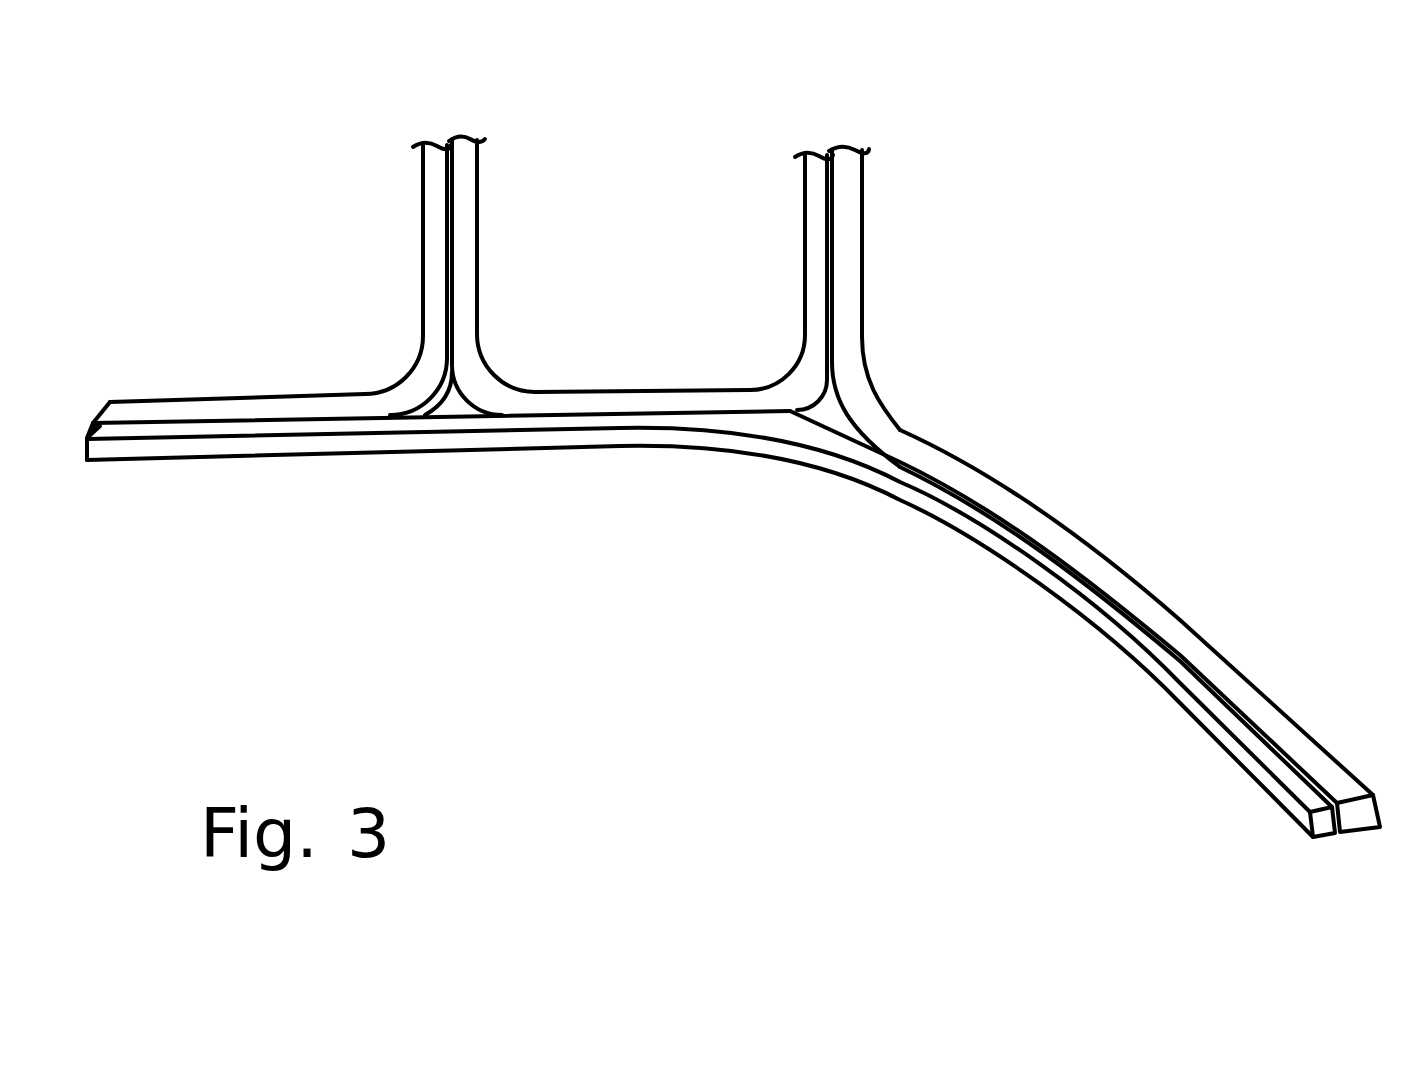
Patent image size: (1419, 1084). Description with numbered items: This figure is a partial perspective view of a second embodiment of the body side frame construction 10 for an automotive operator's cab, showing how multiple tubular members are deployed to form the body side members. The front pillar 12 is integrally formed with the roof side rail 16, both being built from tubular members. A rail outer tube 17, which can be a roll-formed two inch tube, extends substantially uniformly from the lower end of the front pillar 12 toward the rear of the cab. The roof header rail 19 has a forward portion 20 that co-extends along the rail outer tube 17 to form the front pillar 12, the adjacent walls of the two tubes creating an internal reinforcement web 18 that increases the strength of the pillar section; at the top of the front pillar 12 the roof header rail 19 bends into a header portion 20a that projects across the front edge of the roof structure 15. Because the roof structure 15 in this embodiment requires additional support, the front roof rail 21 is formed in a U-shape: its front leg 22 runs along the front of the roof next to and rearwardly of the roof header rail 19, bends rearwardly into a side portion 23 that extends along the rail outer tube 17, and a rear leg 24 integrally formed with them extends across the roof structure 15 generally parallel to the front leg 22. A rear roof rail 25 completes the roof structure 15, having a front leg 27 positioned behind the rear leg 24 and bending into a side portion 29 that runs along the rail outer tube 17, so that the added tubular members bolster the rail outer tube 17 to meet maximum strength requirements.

The body side frame construction 10 is at (563, 690).
The front pillar 12 is at (1255, 678).
The roof structure 15 is at (312, 152).
The roof side rail 16 is at (377, 455).
The rail outer tube 17 is at (787, 453).
The internal reinforcement web 18 is at (1343, 822).
The roof header rail 19 is at (928, 442).
The forward portion 20 is at (1097, 565).
The header portion 20a is at (862, 248).
The front roof rail 21 is at (466, 180).
The front leg 22 is at (815, 235).
The side portion 23 is at (643, 393).
The rear leg 24 is at (465, 277).
The rear roof rail 25 is at (163, 398).
The front leg 27 is at (432, 258).
The side portion 29 is at (262, 408).